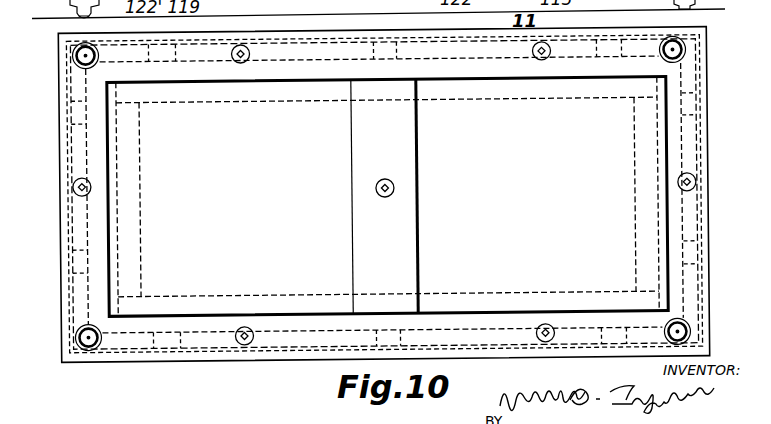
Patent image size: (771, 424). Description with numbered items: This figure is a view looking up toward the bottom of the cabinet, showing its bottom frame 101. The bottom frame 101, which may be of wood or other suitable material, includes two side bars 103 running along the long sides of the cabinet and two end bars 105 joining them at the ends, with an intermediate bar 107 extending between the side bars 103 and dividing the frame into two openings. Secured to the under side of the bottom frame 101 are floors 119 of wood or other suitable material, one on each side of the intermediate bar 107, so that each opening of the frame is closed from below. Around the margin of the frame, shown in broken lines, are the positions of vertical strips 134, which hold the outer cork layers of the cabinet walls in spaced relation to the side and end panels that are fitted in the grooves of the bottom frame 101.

The bottom frame 101 is at (692, 77).
The side bars 103 is at (343, 33).
The end bars 105 is at (62, 212).
The intermediate bar 107 is at (410, 151).
The floors 119 is at (387, 197).
The vertical strips 134 is at (165, 61).